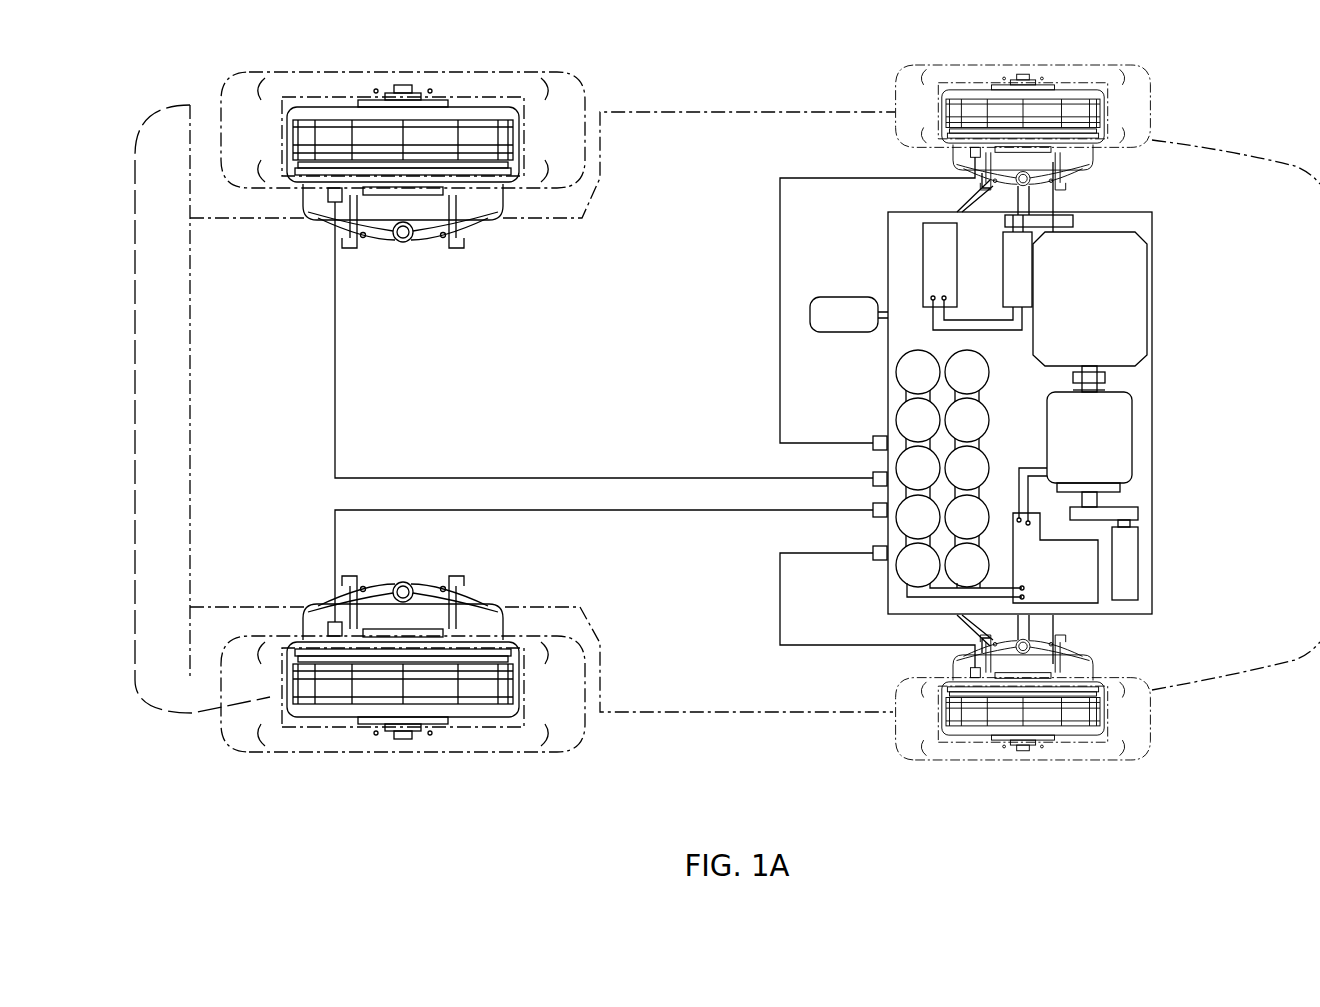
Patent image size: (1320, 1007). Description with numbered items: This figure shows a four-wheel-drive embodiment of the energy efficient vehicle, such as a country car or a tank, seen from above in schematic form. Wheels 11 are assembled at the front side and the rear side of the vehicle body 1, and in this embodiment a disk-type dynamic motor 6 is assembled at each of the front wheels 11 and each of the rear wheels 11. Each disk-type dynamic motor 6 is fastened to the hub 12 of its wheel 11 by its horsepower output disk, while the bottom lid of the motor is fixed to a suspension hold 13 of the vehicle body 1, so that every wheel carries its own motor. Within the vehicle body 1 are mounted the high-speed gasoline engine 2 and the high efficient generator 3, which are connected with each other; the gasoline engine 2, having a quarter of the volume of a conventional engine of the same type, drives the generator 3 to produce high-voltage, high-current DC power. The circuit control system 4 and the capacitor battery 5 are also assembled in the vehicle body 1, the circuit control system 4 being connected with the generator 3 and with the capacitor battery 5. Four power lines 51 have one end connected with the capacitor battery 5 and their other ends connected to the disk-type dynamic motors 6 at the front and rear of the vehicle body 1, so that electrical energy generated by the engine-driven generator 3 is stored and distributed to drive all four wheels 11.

The vehicle body 1 is at (775, 128).
The wheels 11 is at (230, 95).
The hub 12 is at (262, 700).
The suspension hold 13 is at (462, 227).
The disk-type dynamic motor 6 is at (465, 127).
The high-speed gasoline engine 2 is at (1145, 260).
The high efficient generator 3 is at (1122, 418).
The circuit control system 4 is at (1087, 571).
The capacitor battery 5 is at (903, 566).
The power lines 51 is at (778, 277).